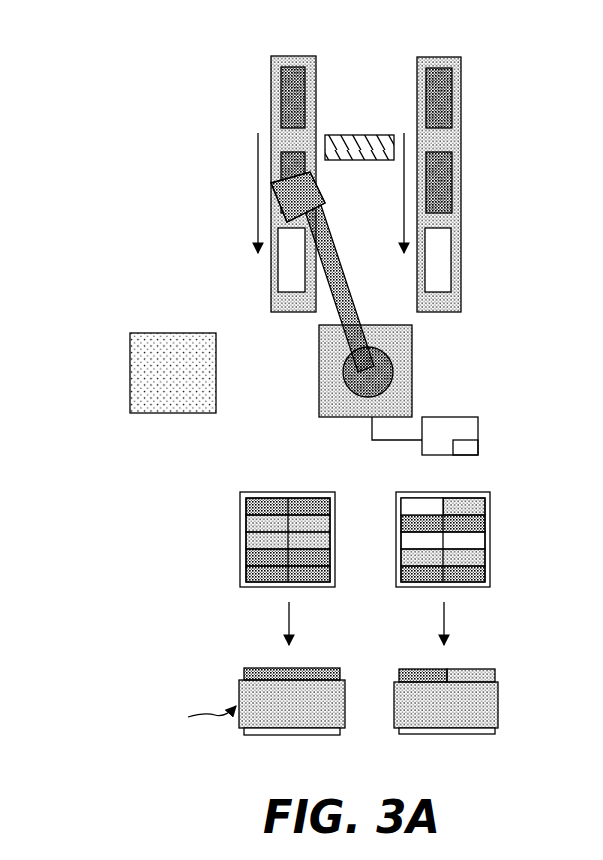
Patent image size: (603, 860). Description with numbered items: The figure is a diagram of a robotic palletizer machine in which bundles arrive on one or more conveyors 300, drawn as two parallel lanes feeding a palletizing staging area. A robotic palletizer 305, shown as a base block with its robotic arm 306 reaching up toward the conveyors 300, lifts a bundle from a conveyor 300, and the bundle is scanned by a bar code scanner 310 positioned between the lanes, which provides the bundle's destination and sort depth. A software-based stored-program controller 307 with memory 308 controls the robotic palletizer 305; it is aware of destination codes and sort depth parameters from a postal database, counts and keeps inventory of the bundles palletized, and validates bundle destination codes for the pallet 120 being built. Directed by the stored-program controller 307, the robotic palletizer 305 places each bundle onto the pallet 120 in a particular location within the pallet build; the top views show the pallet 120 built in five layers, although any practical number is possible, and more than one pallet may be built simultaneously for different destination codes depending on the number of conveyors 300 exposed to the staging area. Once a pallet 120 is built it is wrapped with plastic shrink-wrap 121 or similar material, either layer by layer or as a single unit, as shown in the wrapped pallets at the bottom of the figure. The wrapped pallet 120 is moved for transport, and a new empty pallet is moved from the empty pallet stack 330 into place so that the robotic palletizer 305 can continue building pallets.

The conveyor 300 is at (417, 70).
The bar code scanner 310 is at (360, 135).
The robotic arm 306 is at (336, 276).
The robotic palletizer 305 is at (428, 363).
The stored-program controller 307 is at (478, 425).
The memory 308 is at (470, 450).
The empty pallet stack 330 is at (130, 380).
The pallet 120 is at (240, 510).
The plastic shrink-wrap 121 is at (504, 703).